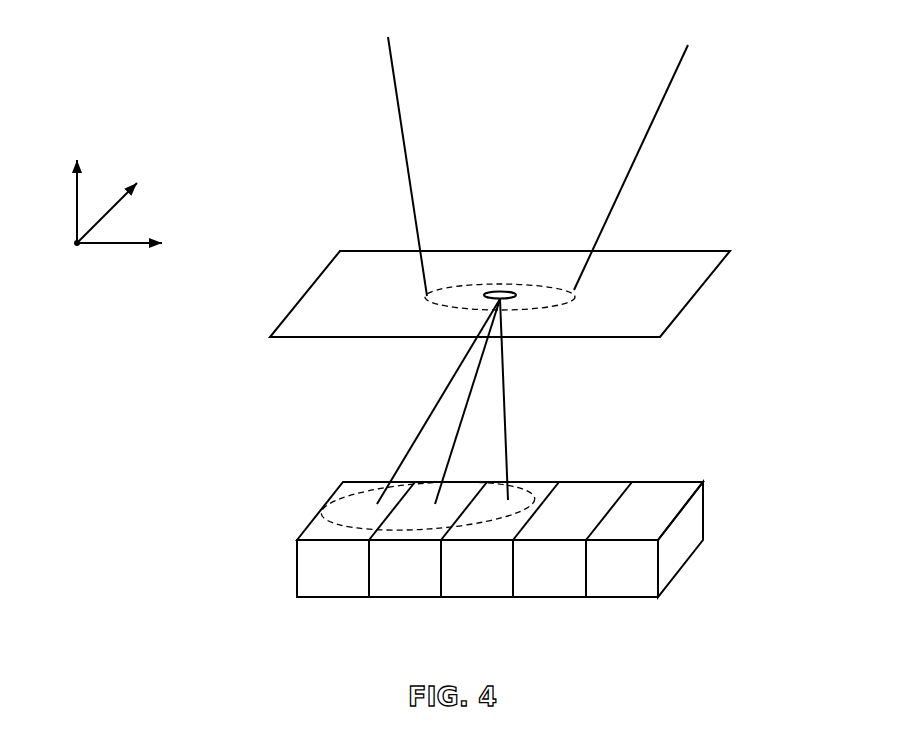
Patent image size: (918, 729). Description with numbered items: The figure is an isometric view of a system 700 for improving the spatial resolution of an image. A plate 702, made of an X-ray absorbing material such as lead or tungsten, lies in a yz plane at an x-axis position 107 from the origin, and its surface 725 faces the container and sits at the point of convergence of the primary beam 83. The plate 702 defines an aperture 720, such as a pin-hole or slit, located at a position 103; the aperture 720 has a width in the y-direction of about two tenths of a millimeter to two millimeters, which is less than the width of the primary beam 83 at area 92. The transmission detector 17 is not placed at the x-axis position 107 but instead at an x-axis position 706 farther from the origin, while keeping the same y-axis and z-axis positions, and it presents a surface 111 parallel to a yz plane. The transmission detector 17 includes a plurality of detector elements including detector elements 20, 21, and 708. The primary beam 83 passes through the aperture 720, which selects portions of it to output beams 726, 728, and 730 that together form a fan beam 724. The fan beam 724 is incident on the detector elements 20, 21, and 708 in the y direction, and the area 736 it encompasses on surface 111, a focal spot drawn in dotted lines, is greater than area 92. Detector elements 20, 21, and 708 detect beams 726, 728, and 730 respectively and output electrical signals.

The system 700 is at (185, 40).
The primary beam 83 is at (637, 97).
The position 103 is at (433, 300).
The x-axis position 107 is at (546, 279).
The plate 702 is at (695, 295).
The surface 725 is at (645, 262).
The area 92 is at (535, 298).
The aperture 720 is at (500, 291).
The fan beam 724 is at (466, 401).
The beam 726 is at (418, 437).
The beam 728 is at (473, 390).
The beam 730 is at (503, 362).
The surface 111 is at (473, 541).
The x-axis position 706 is at (422, 584).
The detector element 20 is at (428, 522).
The detector element 21 is at (527, 487).
The transmission detector 17 is at (692, 600).
The detector element 708 is at (396, 505).
The area 736 is at (350, 510).